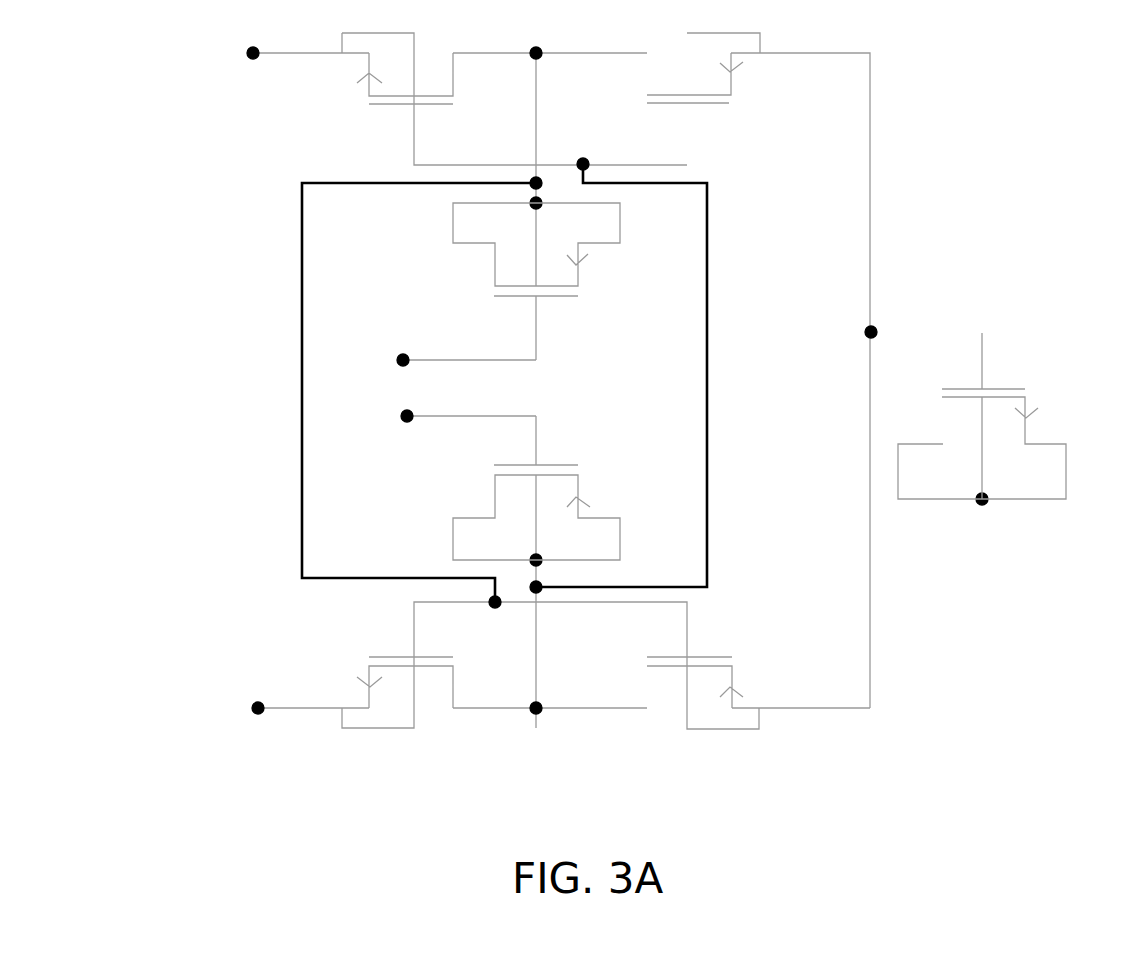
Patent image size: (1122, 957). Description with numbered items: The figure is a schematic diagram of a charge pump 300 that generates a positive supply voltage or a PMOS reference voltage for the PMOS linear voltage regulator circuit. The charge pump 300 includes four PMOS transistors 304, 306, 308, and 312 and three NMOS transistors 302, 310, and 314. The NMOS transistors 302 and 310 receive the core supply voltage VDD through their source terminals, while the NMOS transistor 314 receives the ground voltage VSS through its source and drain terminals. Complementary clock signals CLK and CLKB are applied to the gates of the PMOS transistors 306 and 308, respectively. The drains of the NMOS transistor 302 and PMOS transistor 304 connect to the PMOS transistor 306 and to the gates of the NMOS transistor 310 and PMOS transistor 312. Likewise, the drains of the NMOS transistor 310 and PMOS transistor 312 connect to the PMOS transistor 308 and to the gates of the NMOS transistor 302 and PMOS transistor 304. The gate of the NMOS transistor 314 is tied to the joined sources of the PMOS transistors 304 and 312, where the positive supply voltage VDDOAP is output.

The charge pump 300 is at (865, 745).
The NMOS transistor 302 is at (359, 78).
The PMOS transistor 304 is at (735, 68).
The PMOS transistor 306 is at (566, 249).
The PMOS transistor 308 is at (565, 512).
The NMOS transistor 310 is at (385, 670).
The PMOS transistor 312 is at (715, 665).
The NMOS transistor 314 is at (992, 416).